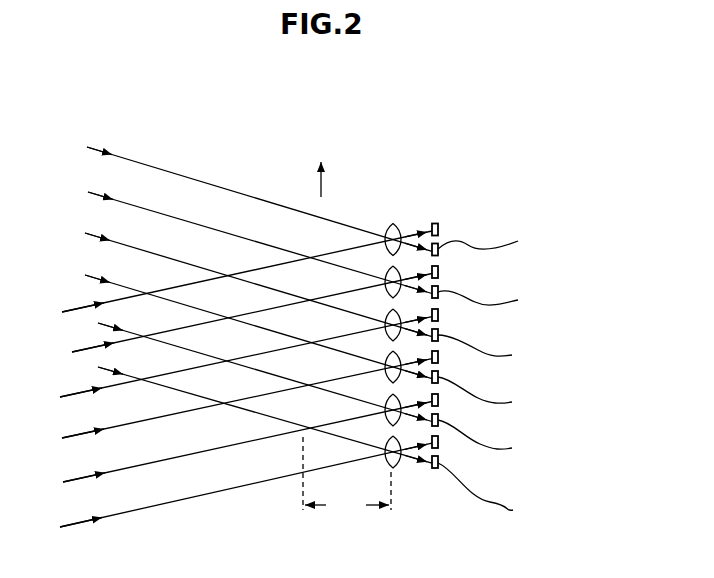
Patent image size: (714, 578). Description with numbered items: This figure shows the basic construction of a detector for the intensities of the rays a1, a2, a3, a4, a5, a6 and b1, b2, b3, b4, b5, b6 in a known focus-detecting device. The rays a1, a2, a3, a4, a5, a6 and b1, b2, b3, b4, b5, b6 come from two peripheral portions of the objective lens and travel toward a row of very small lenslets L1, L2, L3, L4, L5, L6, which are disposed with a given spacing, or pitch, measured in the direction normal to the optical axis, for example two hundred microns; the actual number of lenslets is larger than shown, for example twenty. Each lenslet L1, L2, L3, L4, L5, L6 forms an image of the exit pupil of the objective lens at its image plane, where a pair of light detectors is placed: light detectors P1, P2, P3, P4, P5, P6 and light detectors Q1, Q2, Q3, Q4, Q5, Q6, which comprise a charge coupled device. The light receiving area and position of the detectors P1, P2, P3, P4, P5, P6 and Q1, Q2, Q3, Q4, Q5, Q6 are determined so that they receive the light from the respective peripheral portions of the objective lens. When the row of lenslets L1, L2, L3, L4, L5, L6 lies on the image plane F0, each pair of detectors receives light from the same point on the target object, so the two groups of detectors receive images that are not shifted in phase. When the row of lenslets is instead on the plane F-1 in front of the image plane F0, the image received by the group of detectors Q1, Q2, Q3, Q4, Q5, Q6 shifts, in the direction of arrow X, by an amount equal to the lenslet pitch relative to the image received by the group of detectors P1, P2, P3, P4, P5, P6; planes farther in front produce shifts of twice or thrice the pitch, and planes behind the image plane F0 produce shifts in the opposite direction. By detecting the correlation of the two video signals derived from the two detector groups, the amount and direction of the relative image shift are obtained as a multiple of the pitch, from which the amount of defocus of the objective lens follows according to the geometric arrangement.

The ray a1 is at (230, 281).
The ray a2 is at (230, 323).
The ray a3 is at (230, 365).
The ray a4 is at (230, 408).
The ray a5 is at (230, 449).
The ray a6 is at (230, 490).
The ray b1 is at (242, 192).
The ray b2 is at (242, 237).
The ray b3 is at (242, 281).
The ray b4 is at (242, 323).
The ray b5 is at (251, 369).
The ray b6 is at (251, 411).
The lenslet L1 is at (390, 227).
The lenslet L2 is at (390, 270).
The lenslet L3 is at (390, 313).
The lenslet L4 is at (390, 355).
The lenslet L5 is at (390, 398).
The lenslet L6 is at (390, 440).
The light detector P1 is at (436, 224).
The light detector P2 is at (438, 272).
The light detector P3 is at (438, 316).
The light detector P4 is at (438, 359).
The light detector P5 is at (437, 403).
The light detector P6 is at (437, 447).
The light detector Q1 is at (494, 245).
The light detector Q2 is at (494, 304).
The light detector Q3 is at (494, 354).
The light detector Q4 is at (494, 399).
The light detector Q5 is at (494, 443).
The light detector Q6 is at (494, 497).
The arrow X is at (321, 182).
The plane F-1 is at (297, 492).
The image plane F0 is at (395, 509).